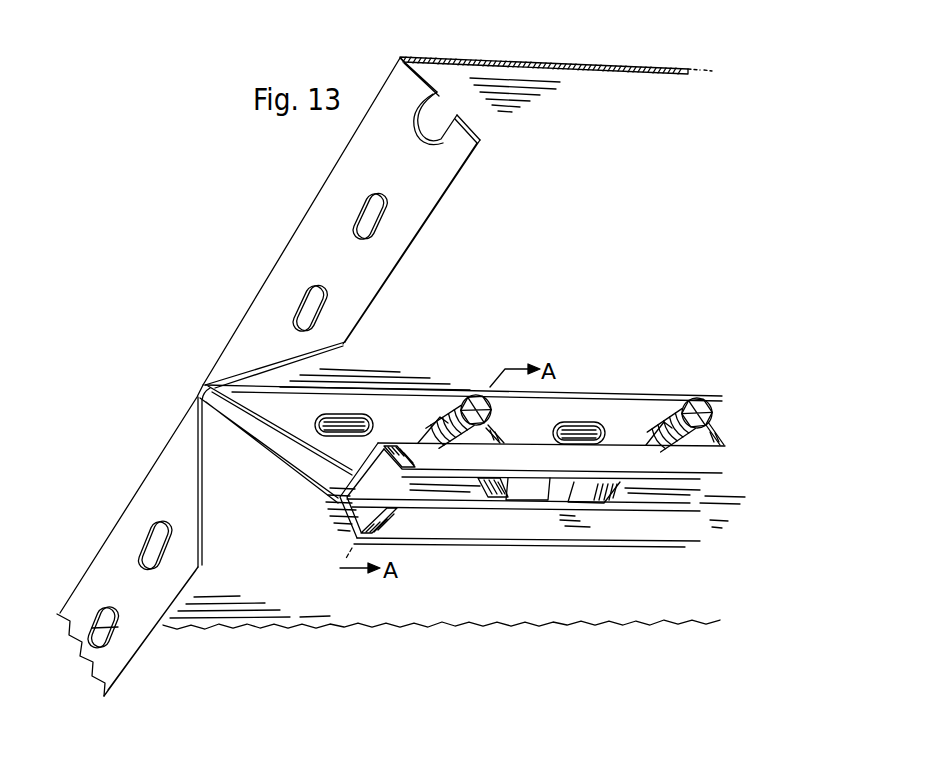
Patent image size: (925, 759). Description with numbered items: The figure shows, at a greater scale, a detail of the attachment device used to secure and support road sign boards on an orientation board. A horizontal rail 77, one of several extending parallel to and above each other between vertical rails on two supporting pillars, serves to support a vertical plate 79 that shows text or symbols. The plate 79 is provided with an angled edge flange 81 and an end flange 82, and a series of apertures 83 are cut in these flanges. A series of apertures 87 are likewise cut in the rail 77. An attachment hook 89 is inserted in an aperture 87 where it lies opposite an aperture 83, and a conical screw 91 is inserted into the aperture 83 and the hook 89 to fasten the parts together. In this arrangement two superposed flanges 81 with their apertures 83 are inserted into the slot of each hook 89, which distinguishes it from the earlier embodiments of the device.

The horizontal rail 77 is at (335, 523).
The vertical plate 79 is at (598, 87).
The angled edge flange 81 is at (283, 450).
The end flange 82 is at (322, 221).
The aperture 83 is at (428, 427).
The aperture 87 is at (665, 490).
The attachment hook 89 is at (593, 500).
The conical screw 91 is at (478, 398).